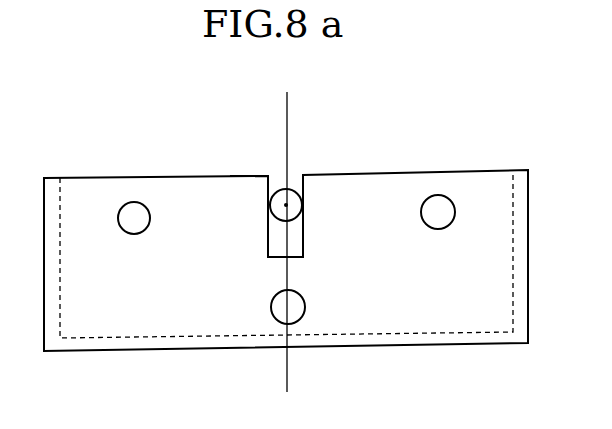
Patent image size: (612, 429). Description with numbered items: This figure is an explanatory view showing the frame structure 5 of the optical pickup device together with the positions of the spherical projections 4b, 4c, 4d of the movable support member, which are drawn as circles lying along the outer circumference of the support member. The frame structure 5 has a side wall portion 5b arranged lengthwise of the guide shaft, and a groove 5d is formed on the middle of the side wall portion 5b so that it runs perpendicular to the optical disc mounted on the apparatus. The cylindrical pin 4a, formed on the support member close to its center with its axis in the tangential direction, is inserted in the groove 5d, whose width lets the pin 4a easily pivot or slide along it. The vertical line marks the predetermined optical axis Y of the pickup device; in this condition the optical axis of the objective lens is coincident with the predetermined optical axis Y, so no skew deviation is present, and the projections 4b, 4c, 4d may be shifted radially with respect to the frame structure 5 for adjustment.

The frame structure 5 is at (171, 355).
The side wall portion 5b is at (243, 188).
The groove 5d is at (305, 236).
The cylindrical pin 4a is at (293, 197).
The spherical projection 4b is at (436, 206).
The spherical projection 4c is at (131, 218).
The spherical projection 4d is at (305, 313).
The predetermined optical axis Y is at (287, 103).